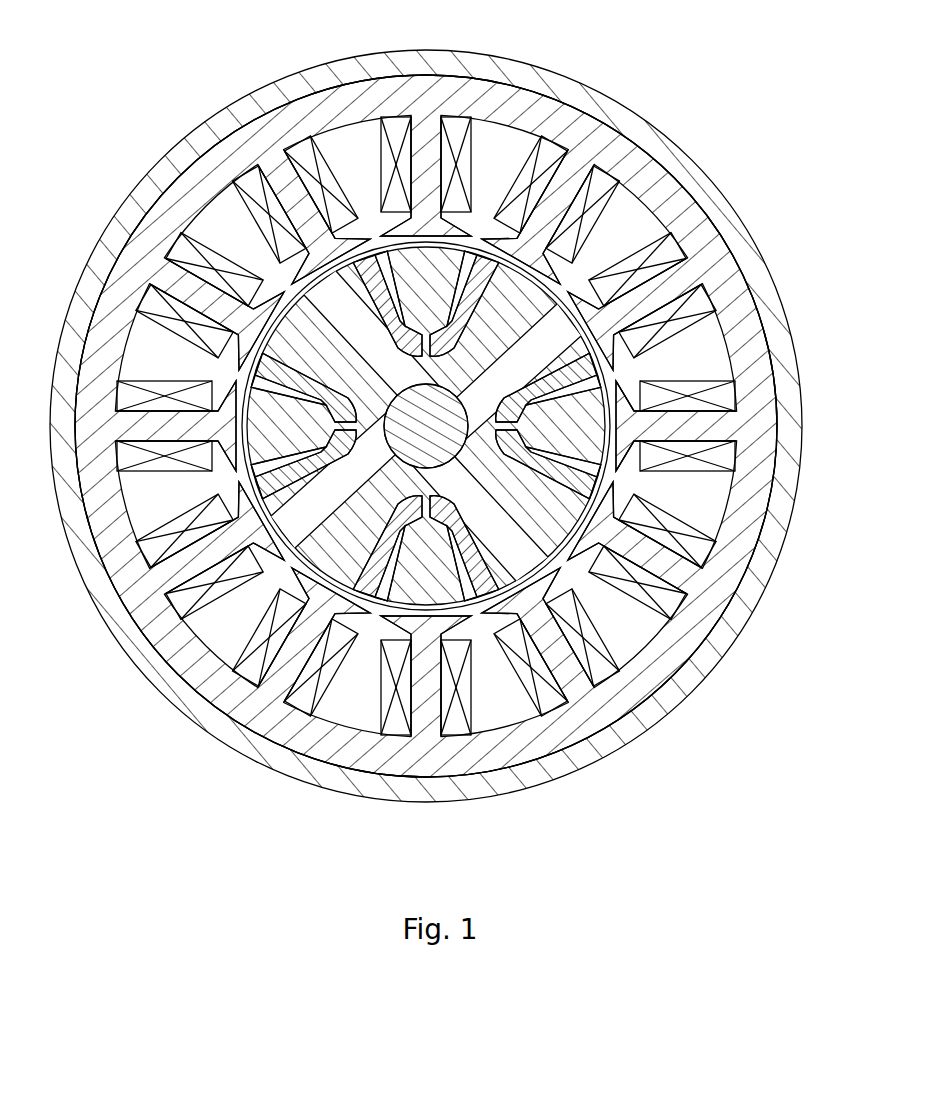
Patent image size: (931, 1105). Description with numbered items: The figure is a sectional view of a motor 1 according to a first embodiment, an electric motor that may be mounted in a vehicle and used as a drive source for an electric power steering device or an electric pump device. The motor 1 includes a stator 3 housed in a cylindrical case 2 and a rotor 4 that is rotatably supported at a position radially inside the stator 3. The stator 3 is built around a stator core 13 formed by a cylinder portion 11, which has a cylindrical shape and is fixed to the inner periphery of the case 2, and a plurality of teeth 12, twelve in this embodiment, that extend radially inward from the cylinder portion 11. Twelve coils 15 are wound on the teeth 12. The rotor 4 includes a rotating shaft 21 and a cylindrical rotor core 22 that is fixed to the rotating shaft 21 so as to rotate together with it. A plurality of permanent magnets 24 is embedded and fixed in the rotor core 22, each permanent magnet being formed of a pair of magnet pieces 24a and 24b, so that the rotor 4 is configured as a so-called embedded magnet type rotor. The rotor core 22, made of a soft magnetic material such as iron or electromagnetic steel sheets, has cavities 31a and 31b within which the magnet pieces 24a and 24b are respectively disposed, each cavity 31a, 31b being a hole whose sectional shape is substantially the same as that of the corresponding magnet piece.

The motor 1 is at (151, 58).
The case 2 is at (289, 81).
The stator 3 is at (262, 112).
The rotor 4 is at (548, 282).
The cylinder portion 11 is at (466, 87).
The teeth 12 is at (578, 150).
The stator core 13 is at (319, 95).
The coils 15 is at (585, 172).
The rotating shaft 21 is at (418, 471).
The rotor core 22 is at (477, 219).
The permanent magnets 24 is at (507, 828).
The magnet piece 24a is at (483, 598).
The magnet piece 24b is at (466, 603).
The cavity 31a is at (635, 368).
The cavity 31b is at (618, 466).